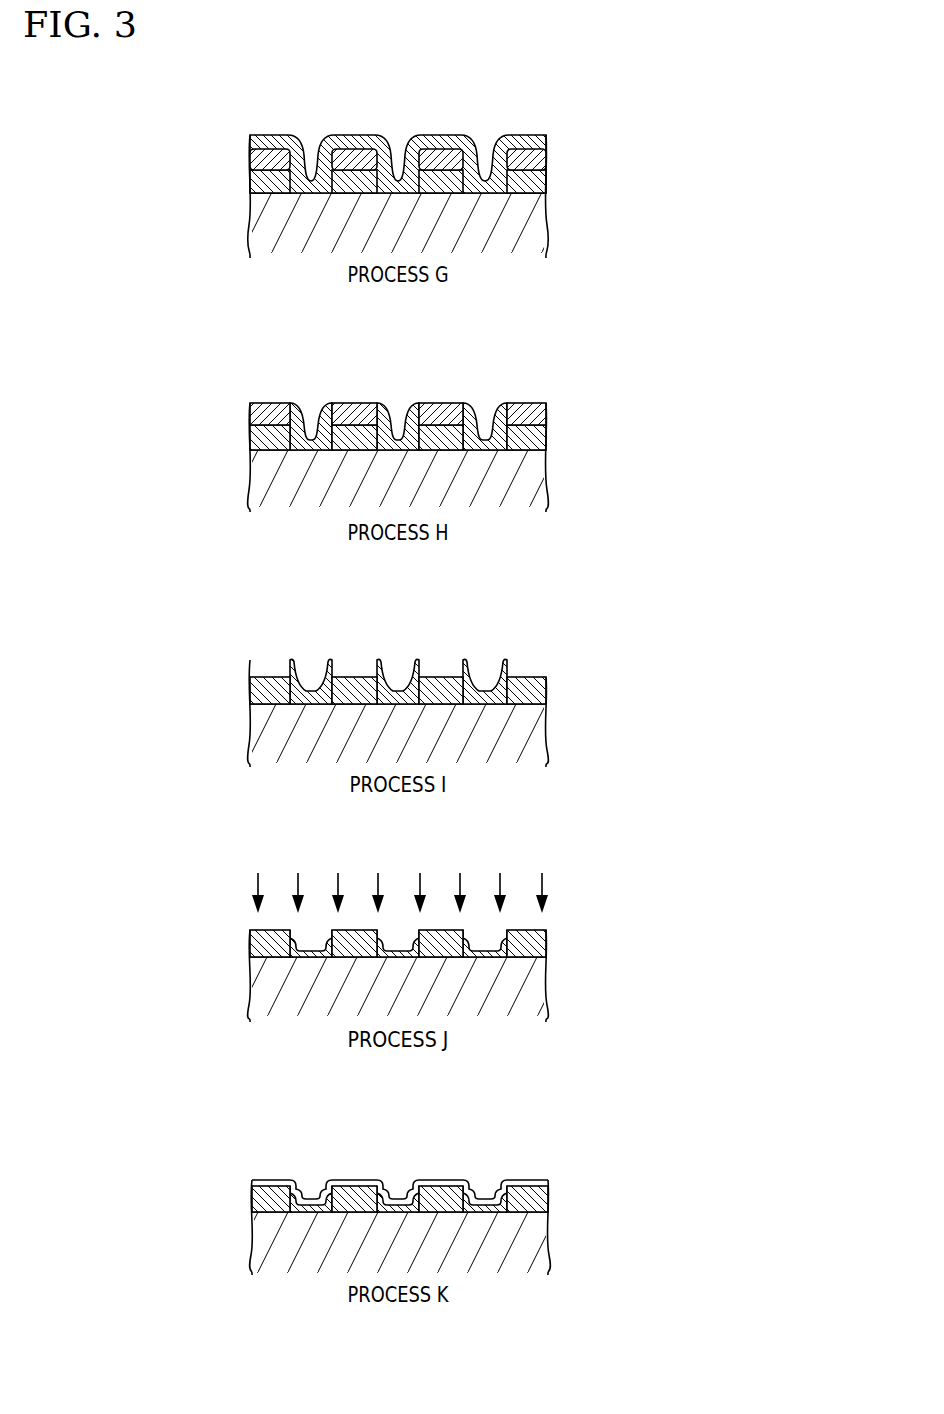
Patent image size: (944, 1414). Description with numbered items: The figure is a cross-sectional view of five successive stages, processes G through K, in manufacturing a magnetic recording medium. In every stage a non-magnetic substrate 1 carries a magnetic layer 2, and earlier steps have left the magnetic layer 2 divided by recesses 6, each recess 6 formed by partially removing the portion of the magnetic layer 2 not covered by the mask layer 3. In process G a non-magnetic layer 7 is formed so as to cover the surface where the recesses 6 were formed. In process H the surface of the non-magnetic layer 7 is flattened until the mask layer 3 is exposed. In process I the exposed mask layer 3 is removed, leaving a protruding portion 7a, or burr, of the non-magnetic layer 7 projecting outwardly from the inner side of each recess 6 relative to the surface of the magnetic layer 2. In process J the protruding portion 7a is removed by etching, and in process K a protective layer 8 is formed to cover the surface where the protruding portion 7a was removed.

The non-magnetic substrate 1 is at (535, 221).
The magnetic layer 2 is at (535, 183).
The mask layer 3 is at (535, 156).
The recess 6 is at (487, 177).
The non-magnetic layer 7 is at (525, 138).
The protruding portion 7a is at (467, 662).
The protective layer 8 is at (529, 1182).